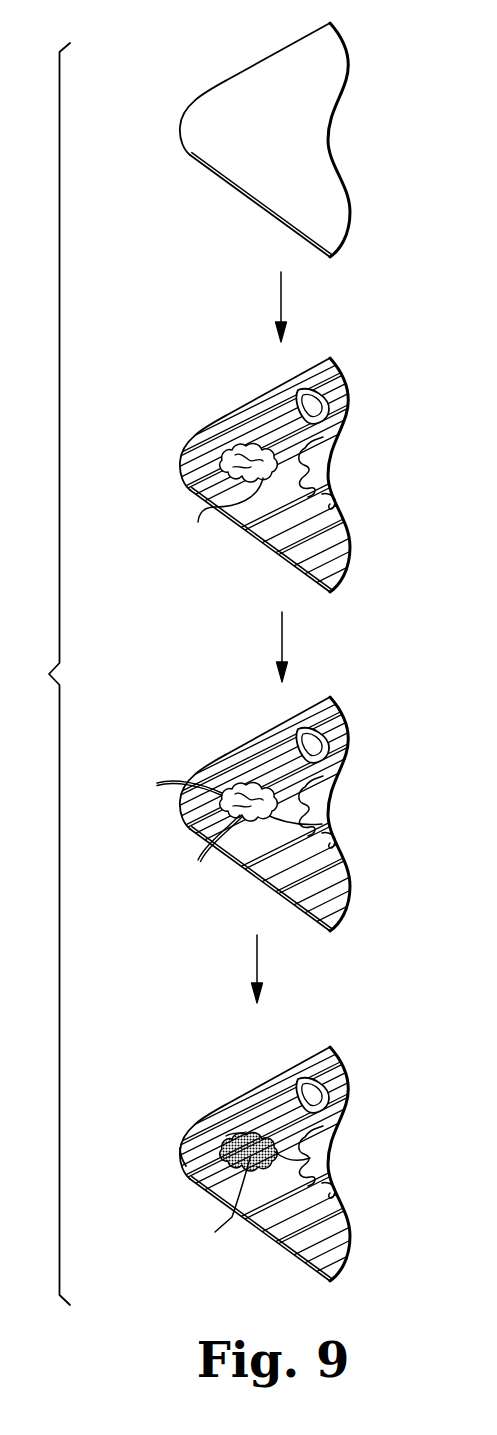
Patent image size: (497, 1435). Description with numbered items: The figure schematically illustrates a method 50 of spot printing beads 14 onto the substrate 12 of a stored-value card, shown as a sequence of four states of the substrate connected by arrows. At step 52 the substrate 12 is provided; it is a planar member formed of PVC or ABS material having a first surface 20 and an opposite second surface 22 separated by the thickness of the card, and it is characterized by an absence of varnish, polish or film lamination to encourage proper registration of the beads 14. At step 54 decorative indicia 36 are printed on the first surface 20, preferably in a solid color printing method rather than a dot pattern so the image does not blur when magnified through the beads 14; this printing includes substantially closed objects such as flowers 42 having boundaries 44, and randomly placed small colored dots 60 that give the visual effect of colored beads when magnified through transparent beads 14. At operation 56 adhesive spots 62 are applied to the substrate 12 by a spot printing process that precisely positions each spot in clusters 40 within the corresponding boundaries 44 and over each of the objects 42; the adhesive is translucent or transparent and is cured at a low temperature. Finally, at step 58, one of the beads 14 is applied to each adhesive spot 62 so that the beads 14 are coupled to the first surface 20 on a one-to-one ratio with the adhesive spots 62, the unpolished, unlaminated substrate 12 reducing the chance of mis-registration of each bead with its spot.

The substrate 12 is at (243, 105).
The beads 14 is at (232, 1190).
The first surface 20 is at (228, 157).
The second surface 22 is at (260, 210).
The decorative indicia 36 is at (277, 749).
The clusters 40 is at (162, 1144).
The flowers 42 is at (220, 761).
The boundaries 44 is at (304, 817).
The method 50 is at (42, 674).
The providing substrate step 52 is at (362, 58).
The printing indicia step 54 is at (321, 473).
The applying adhesive spots step 56 is at (321, 812).
The applying beads step 58 is at (321, 1162).
The colored dots 60 is at (195, 638).
The adhesive spots 62 is at (215, 853).